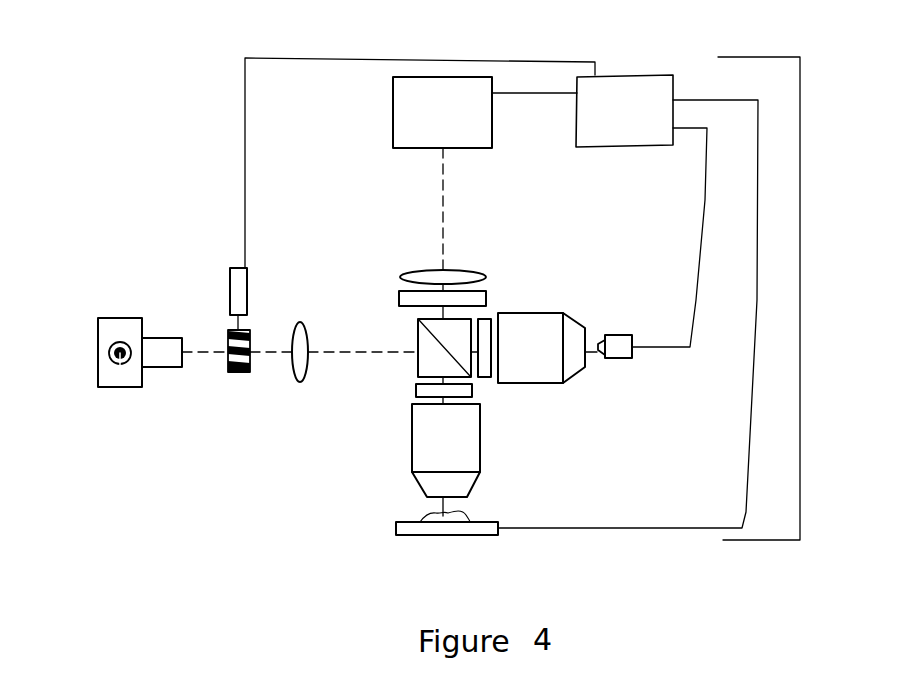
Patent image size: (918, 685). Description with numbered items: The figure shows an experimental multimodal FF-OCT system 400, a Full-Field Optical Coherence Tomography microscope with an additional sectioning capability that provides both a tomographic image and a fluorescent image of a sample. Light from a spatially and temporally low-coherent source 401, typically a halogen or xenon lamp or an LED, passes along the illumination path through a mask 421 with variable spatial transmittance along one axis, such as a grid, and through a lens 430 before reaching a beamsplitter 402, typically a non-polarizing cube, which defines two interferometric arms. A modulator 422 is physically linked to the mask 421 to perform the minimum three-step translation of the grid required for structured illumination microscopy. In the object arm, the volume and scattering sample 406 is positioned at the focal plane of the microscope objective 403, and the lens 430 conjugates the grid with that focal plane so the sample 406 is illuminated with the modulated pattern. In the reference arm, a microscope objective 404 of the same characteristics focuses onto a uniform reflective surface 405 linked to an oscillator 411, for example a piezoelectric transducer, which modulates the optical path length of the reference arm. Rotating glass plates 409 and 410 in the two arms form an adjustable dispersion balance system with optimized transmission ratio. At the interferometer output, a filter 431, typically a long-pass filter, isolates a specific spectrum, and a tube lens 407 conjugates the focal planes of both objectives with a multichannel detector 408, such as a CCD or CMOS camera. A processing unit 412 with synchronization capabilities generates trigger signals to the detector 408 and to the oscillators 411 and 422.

The multimodal FF-OCT system 400 is at (787, 298).
The source 401 is at (117, 334).
The beamsplitter 402 is at (418, 345).
The microscope objective 403 is at (437, 453).
The microscope objective 404 is at (538, 357).
The uniform reflective surface 405 is at (612, 358).
The sample 406 is at (422, 520).
The tube lens 407 is at (470, 270).
The multichannel detector 408 is at (417, 118).
The glass plate 409 is at (437, 392).
The glass plate 410 is at (503, 312).
The oscillator 411 is at (632, 335).
The processing unit 412 is at (630, 88).
The mask 421 is at (230, 373).
The modulator 422 is at (230, 290).
The lens 430 is at (298, 322).
The filter 431 is at (399, 297).